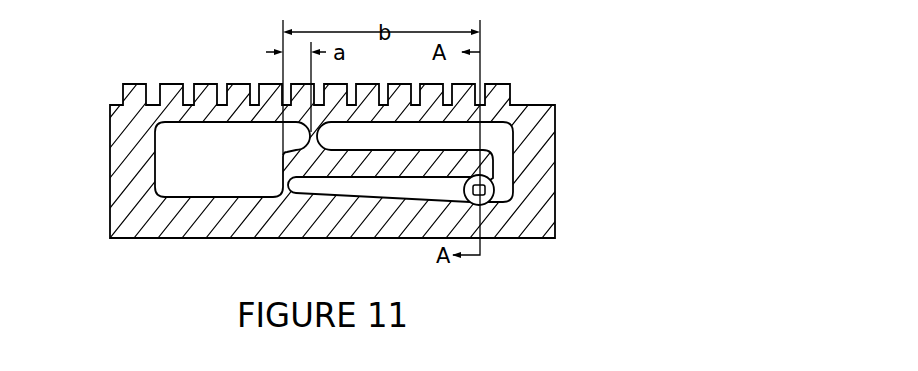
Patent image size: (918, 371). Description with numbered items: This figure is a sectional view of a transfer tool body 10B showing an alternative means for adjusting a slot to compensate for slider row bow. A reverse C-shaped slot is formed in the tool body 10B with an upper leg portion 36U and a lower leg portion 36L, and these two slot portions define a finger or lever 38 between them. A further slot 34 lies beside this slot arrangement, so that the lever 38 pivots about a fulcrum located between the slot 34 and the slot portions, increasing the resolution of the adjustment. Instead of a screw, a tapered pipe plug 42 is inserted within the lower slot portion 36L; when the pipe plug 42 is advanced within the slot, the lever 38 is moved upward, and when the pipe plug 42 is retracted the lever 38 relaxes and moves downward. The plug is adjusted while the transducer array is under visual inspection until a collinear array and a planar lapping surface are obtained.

The tool body 10B is at (555, 140).
The slot 34 is at (162, 166).
The upper leg portion 36U is at (381, 128).
The lower leg portion 36L is at (334, 188).
The lever 38 is at (405, 162).
The tapered pipe plug 42 is at (495, 188).